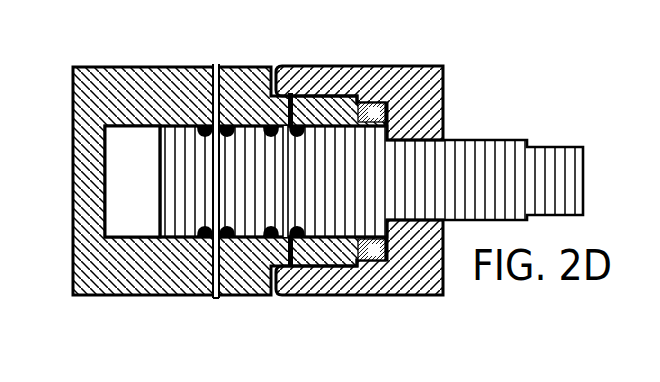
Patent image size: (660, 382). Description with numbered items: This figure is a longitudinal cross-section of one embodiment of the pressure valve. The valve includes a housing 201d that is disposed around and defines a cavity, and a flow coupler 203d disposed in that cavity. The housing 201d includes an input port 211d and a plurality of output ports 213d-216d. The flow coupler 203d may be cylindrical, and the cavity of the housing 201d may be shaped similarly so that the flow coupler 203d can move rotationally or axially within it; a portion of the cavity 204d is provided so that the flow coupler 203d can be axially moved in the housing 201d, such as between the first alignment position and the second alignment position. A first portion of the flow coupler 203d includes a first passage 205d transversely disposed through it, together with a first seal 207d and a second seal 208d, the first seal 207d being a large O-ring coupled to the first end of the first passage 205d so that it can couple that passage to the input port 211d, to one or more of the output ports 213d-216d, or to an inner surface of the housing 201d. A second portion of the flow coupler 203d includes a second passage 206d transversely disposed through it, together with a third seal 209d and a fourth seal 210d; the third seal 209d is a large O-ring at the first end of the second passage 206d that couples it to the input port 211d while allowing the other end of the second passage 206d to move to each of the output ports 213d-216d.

The housing 201d is at (110, 83).
The flow coupler 203d is at (465, 191).
The cavity 204d is at (122, 169).
The first passage 205d is at (288, 186).
The second passage 206d is at (213, 186).
The first seal 207d is at (294, 247).
The second seal 208d is at (294, 100).
The third seal 209d is at (206, 247).
The fourth seal 210d is at (206, 106).
The input port 211d is at (214, 302).
The plurality of output ports 213d-216d is at (224, 63).